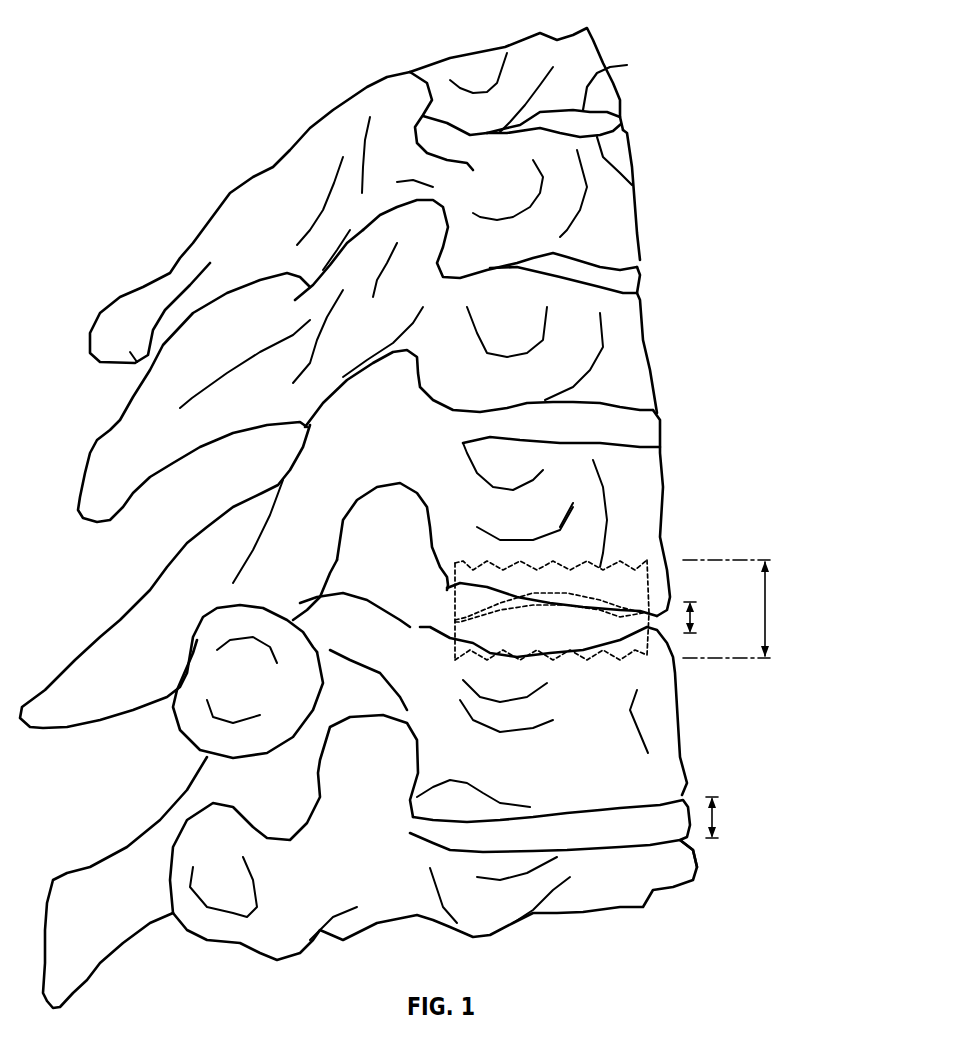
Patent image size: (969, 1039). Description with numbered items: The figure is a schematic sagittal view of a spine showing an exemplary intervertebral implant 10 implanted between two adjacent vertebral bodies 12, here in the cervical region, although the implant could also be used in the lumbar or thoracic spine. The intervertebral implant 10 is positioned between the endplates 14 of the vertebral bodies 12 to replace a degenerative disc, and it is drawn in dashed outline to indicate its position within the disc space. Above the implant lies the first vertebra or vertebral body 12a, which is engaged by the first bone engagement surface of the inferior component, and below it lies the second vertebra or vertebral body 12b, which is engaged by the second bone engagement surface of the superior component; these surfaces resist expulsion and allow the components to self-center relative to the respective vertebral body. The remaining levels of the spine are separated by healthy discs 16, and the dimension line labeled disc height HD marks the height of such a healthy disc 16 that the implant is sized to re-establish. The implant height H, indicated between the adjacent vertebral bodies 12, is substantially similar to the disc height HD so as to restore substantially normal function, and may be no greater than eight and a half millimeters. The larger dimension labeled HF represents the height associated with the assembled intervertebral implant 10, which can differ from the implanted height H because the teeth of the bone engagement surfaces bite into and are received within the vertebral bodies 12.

The intervertebral implant 10 is at (586, 610).
The vertebral bodies 12 is at (613, 522).
The first vertebra or vertebral body 12a is at (538, 526).
The second vertebra or vertebral body 12b is at (593, 711).
The endplates 14 is at (512, 355).
The healthy disc 16 is at (573, 468).
The implant height H is at (713, 623).
The height associated with an assembled intervertebral implant HF is at (749, 609).
The disc height HD is at (741, 817).